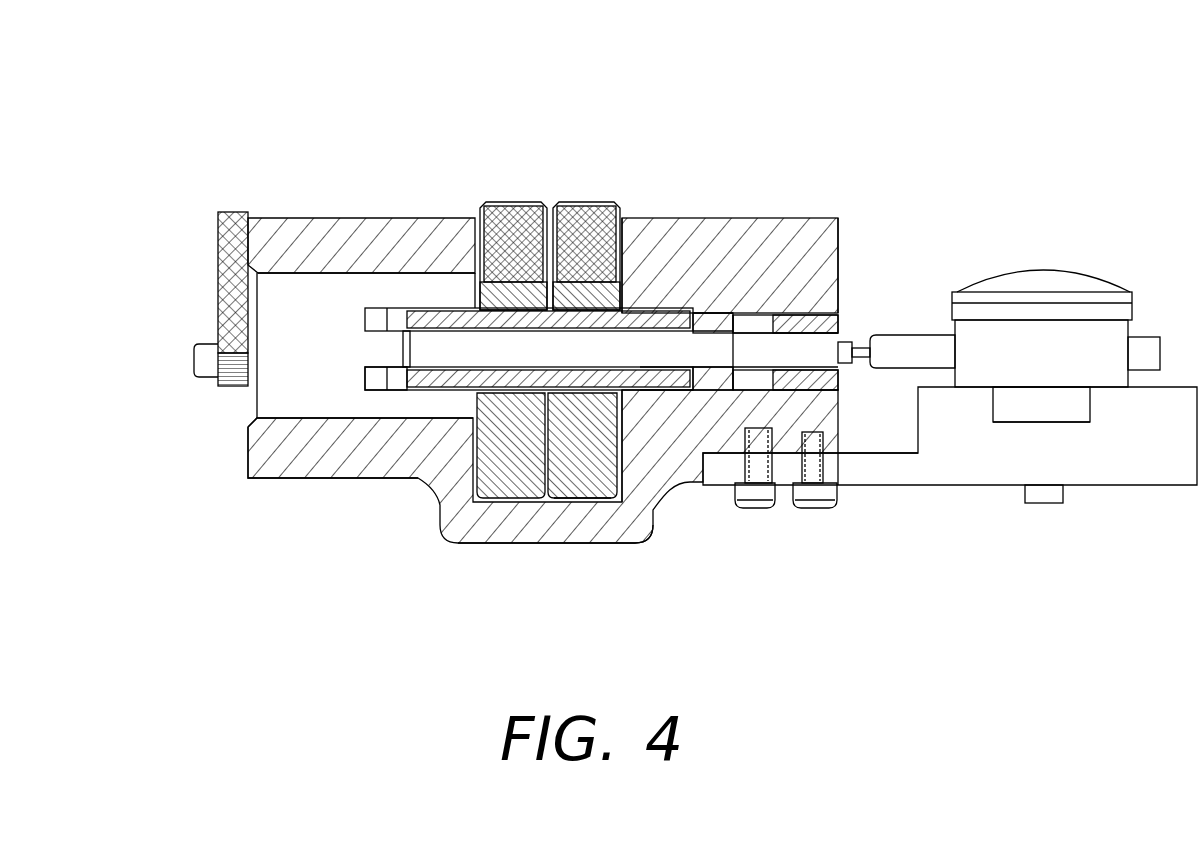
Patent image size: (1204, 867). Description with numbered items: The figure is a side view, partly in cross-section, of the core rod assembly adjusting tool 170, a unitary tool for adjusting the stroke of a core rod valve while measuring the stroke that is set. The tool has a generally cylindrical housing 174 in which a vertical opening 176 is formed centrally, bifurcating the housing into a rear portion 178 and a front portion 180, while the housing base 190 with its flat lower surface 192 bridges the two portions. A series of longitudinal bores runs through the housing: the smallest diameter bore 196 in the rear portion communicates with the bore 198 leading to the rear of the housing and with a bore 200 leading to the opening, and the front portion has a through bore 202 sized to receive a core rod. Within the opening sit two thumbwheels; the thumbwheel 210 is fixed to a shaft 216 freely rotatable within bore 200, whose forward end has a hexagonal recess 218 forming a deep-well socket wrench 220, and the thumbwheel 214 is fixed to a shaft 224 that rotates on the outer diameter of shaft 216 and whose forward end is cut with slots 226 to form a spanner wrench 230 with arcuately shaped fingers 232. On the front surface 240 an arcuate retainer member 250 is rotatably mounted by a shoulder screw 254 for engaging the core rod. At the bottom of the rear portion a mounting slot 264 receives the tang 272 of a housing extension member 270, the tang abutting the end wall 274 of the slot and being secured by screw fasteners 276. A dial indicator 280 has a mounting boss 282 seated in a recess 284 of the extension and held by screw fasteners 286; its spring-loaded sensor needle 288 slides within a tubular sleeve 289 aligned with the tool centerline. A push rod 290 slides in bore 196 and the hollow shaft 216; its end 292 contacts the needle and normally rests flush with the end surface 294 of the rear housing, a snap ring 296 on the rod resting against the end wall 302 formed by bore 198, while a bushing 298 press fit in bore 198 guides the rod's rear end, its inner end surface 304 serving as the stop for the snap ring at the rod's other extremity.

The core rod assembly adjusting tool 170 is at (583, 103).
The housing 174 is at (808, 222).
The vertical opening 176 is at (612, 538).
The rear portion 178 is at (790, 268).
The front portion 180 is at (420, 225).
The housing base 190 is at (495, 528).
The flat lower surface 192 is at (592, 545).
The bore 196 is at (705, 315).
The bore 198 is at (795, 322).
The bore 200 is at (650, 392).
The through bore 202 is at (308, 278).
The thumbwheel 210 is at (578, 486).
The thumbwheel 214 is at (556, 200).
The shaft 216 is at (640, 395).
The recess 218 is at (465, 300).
The deep-well socket wrench 220 is at (476, 420).
The shaft 224 is at (472, 398).
The slots 226 is at (378, 358).
The spanner wrench 230 is at (380, 400).
The arcuately shaped fingers 232 is at (380, 313).
The front surface 240 is at (247, 452).
The retainer member 250 is at (218, 240).
The shoulder screw 254 is at (198, 360).
The mounting slot 264 is at (830, 455).
The housing extension member 270 is at (992, 468).
The tang 272 is at (880, 465).
The end wall 274 is at (722, 486).
The screw fasteners 276 is at (810, 503).
The dial indicator 280 is at (1030, 266).
The mounting boss 282 is at (1055, 405).
The recess 284 is at (1085, 398).
The screw fasteners 286 is at (1052, 494).
The sensor needle 288 is at (850, 344).
The tubular sleeve 289 is at (940, 365).
The push rod 290 is at (618, 300).
The end 292 is at (850, 362).
The end surface 294 is at (840, 245).
The snap ring 296 is at (748, 326).
The bushing 298 is at (815, 326).
The end wall 302 is at (732, 354).
The inner end surface 304 is at (795, 376).